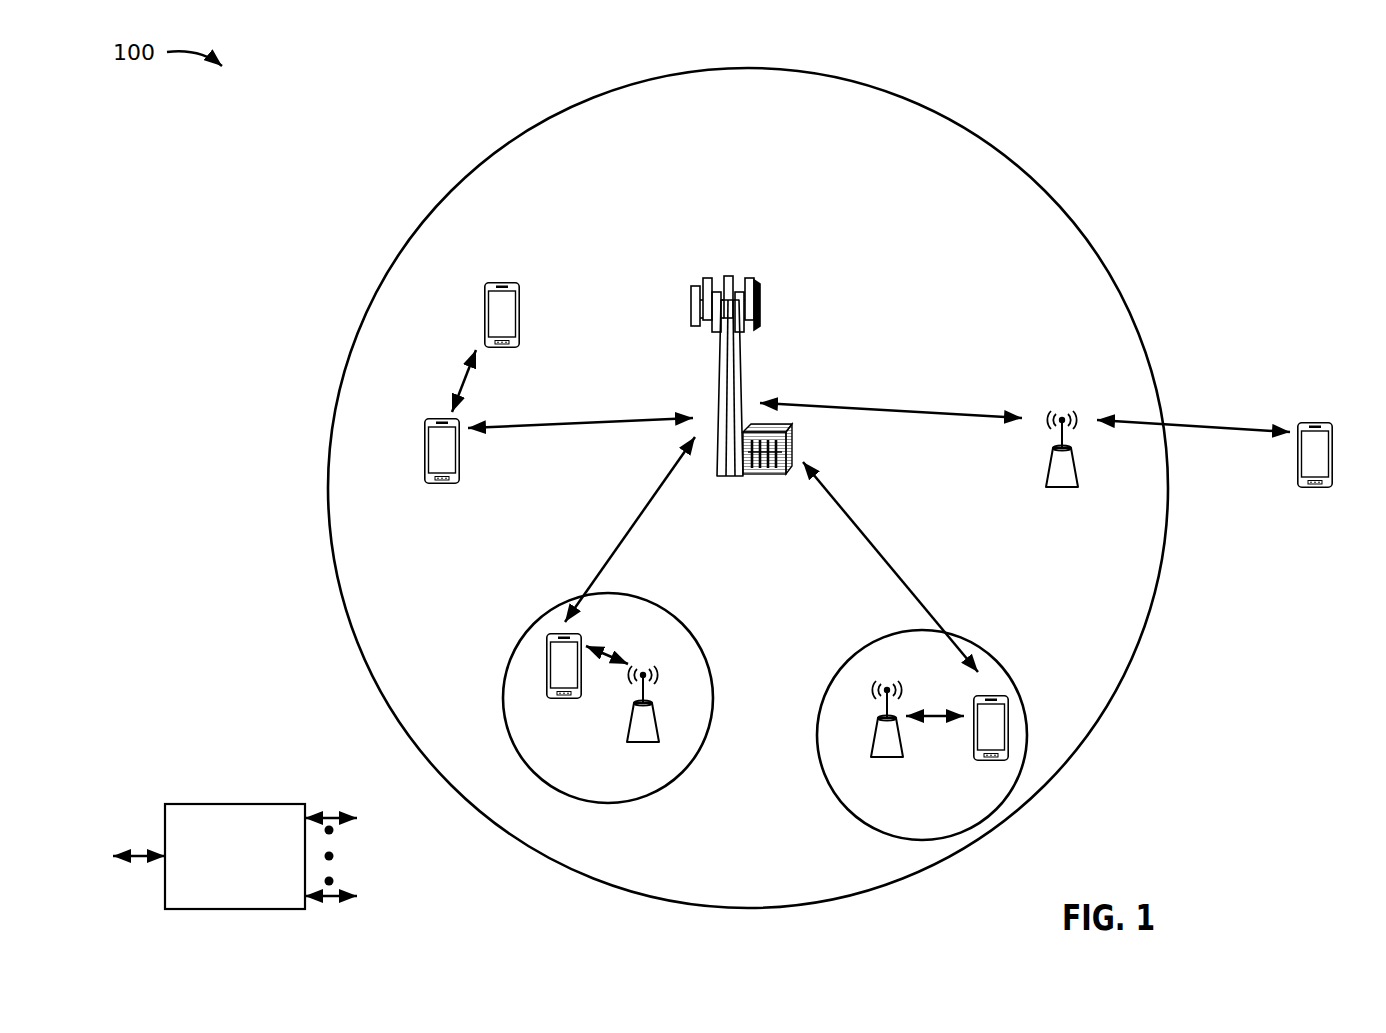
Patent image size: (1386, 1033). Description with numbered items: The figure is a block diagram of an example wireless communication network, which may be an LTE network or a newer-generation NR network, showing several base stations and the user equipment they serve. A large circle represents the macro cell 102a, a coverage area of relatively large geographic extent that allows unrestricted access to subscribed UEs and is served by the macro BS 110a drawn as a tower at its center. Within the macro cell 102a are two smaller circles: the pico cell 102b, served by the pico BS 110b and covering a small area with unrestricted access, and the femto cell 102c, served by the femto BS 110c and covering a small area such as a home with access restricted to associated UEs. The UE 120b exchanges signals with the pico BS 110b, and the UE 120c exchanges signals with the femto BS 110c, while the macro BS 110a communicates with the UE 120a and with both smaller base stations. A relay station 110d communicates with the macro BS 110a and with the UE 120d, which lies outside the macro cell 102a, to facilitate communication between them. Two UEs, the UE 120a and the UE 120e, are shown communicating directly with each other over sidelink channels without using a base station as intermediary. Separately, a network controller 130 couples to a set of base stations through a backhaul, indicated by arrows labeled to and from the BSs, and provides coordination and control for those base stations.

The macro cell 102a is at (1024, 172).
The pico cell 102b is at (691, 634).
The femto cell 102c is at (861, 644).
The macro BS 110a is at (732, 262).
The pico BS 110b is at (659, 732).
The femto BS 110c is at (870, 748).
The relay station 110d is at (1062, 412).
The UE 120a is at (424, 447).
The UE 120b is at (549, 700).
The UE 120c is at (976, 762).
The UE 120d is at (1330, 420).
The UE 120e is at (484, 302).
The network controller 130 is at (232, 803).